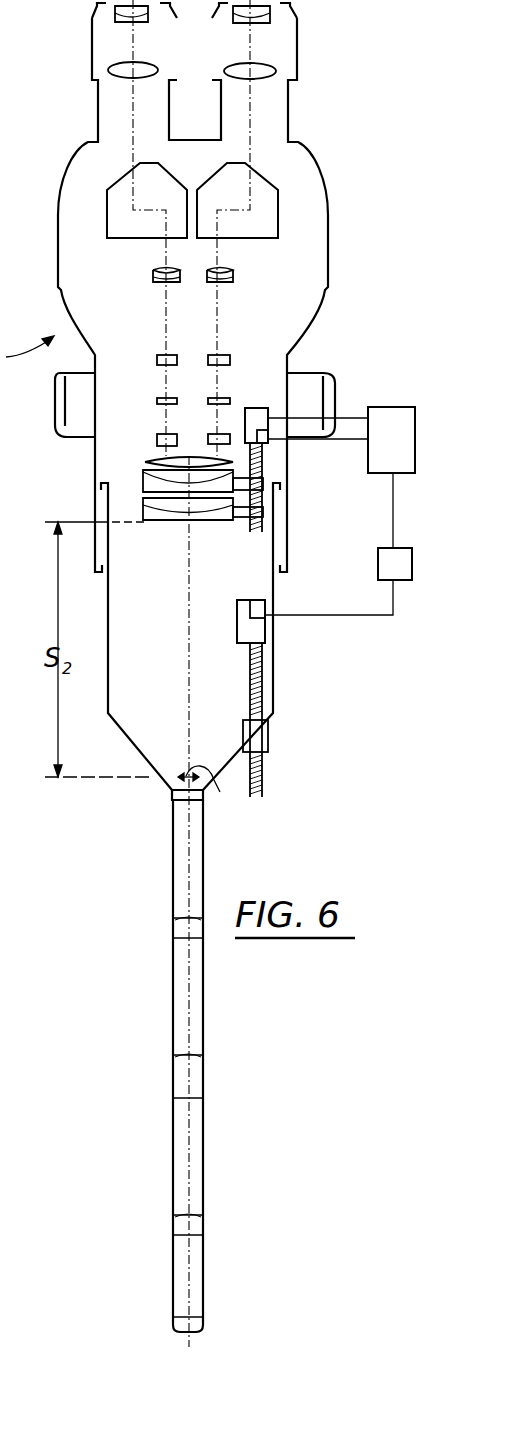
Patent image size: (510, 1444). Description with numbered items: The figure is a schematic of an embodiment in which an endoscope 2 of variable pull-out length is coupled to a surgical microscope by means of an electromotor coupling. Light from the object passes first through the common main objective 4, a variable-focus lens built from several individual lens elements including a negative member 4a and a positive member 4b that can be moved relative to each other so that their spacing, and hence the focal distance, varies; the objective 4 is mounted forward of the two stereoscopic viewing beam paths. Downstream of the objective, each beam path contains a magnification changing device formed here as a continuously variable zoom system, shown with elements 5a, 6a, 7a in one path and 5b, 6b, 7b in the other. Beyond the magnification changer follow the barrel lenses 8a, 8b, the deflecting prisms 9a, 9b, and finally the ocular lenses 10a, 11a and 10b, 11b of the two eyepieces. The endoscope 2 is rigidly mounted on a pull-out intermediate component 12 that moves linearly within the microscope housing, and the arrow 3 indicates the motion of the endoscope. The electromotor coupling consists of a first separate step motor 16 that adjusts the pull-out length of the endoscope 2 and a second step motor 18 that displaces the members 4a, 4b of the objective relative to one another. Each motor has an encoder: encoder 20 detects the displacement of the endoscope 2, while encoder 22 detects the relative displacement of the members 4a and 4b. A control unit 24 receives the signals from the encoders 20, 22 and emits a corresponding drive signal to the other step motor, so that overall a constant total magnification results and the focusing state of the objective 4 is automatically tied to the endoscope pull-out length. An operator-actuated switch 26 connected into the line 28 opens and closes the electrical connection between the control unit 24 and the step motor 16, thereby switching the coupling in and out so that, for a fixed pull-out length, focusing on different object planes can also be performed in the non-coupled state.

The endoscope 2 is at (146, 1069).
The rotation of shaft 3 is at (206, 790).
The main objective 4 is at (145, 488).
The negative member 4a is at (143, 505).
The positive member 4b is at (143, 482).
The magnification changing device element 5a is at (230, 358).
The magnification changing device element 5b is at (157, 358).
The magnification changing device element 6a is at (230, 400).
The magnification changing device element 6b is at (157, 400).
The magnification changing device element 7a is at (232, 435).
The magnification changing device element 7b is at (157, 441).
The barrel lens 8a is at (235, 278).
The barrel lens 8b is at (158, 282).
The deflecting prism 9a is at (265, 211).
The deflecting prism 9b is at (117, 213).
The ocular lens 10a is at (266, 72).
The ocular lens 10b is at (116, 70).
The ocular lens 11a is at (270, 13).
The ocular lens 11b is at (116, 12).
The pull-out intermediate component 12 is at (265, 716).
The first step motor 16 is at (258, 637).
The second step motor 18 is at (262, 417).
The encoder 20 is at (258, 607).
The encoder 22 is at (267, 446).
The control unit 24 is at (390, 460).
The switch 26 is at (402, 568).
The line 28 is at (373, 616).